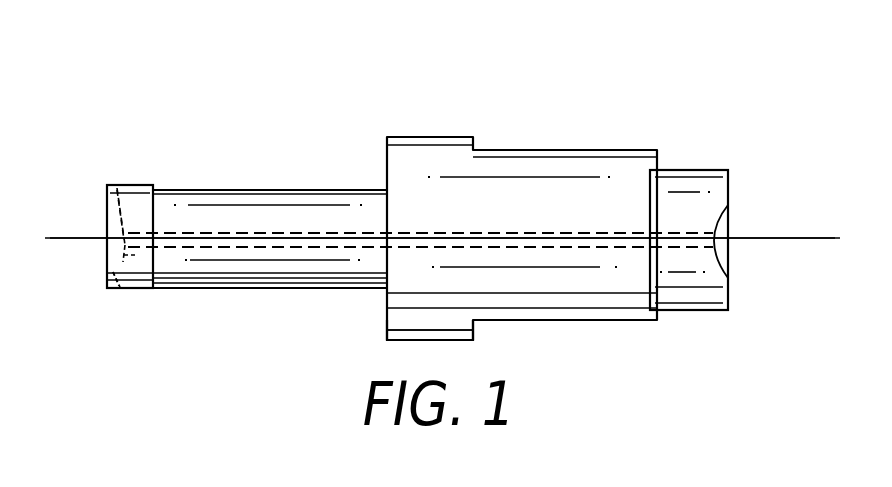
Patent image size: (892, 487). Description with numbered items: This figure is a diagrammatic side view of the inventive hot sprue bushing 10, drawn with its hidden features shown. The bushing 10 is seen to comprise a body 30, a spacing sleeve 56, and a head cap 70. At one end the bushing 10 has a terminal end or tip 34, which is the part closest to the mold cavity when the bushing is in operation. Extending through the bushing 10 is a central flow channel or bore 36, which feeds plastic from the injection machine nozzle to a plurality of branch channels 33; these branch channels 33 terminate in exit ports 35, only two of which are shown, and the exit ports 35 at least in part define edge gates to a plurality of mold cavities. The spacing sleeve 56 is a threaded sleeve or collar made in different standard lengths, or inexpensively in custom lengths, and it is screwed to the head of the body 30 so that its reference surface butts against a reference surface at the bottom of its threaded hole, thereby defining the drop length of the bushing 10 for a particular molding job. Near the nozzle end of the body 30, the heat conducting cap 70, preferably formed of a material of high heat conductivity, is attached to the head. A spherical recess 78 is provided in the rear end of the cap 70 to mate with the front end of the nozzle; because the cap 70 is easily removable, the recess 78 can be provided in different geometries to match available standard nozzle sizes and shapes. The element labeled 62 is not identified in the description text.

The hot sprue bushing 10 is at (432, 58).
The body 30 is at (286, 189).
The branch channels 33 is at (118, 210).
The terminal end or tip 34 is at (147, 178).
The exit ports 35 is at (118, 190).
The central flow channel or bore 36 is at (527, 228).
The spacing sleeve 56 is at (571, 150).
The housing lower flange 62 is at (388, 314).
The head cap 70 is at (702, 170).
The spherical recess 78 is at (720, 228).